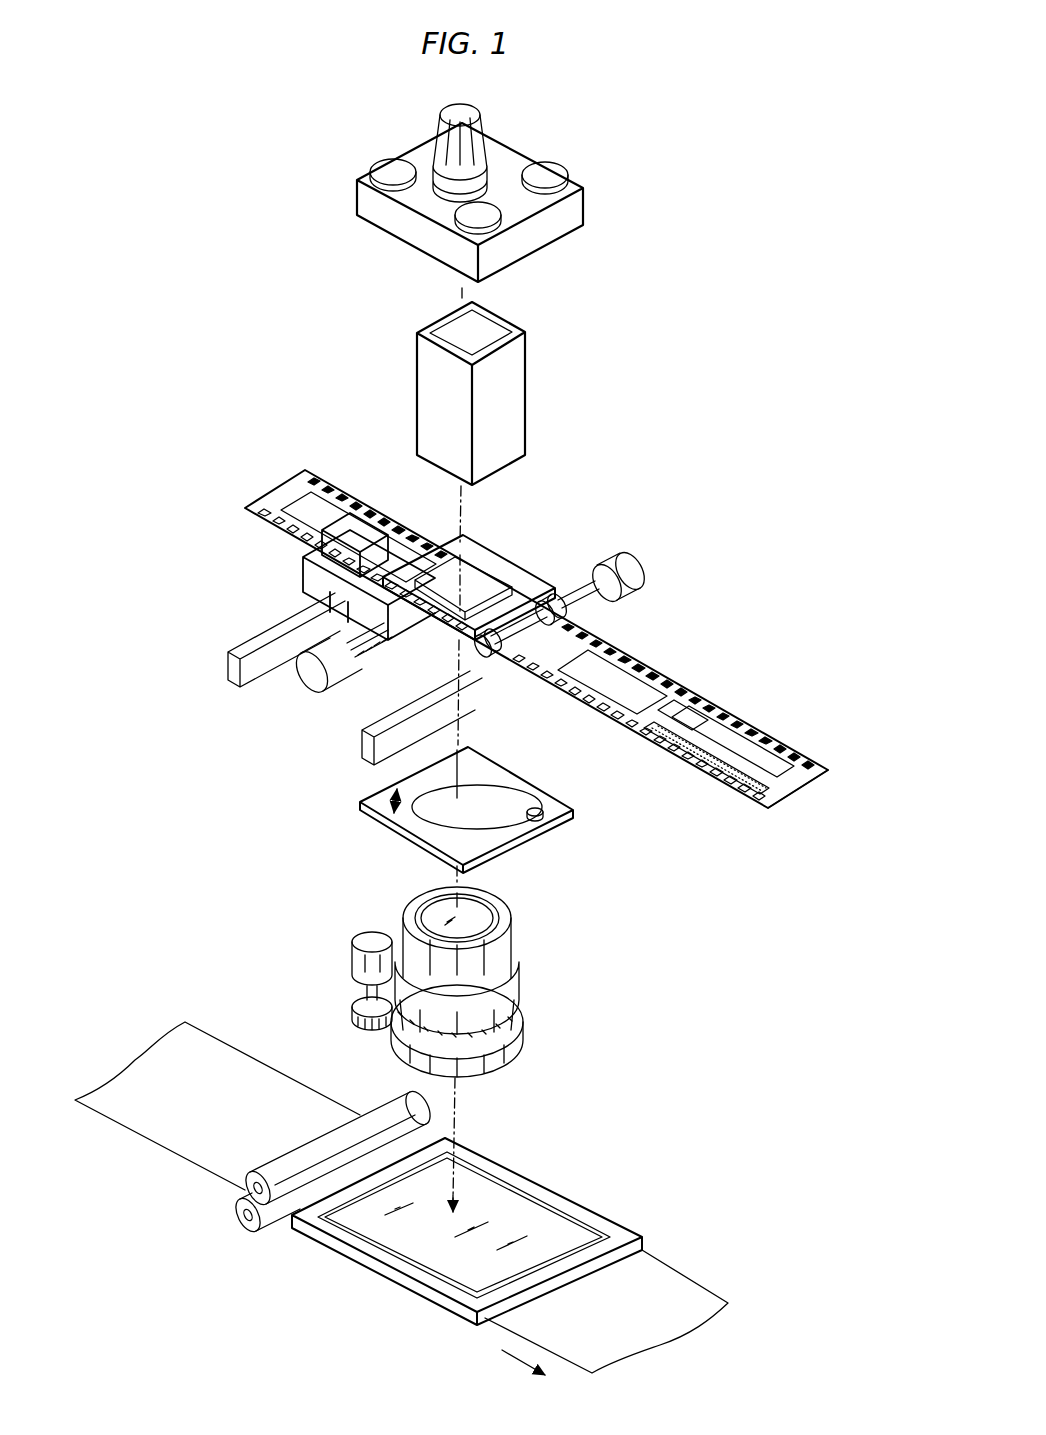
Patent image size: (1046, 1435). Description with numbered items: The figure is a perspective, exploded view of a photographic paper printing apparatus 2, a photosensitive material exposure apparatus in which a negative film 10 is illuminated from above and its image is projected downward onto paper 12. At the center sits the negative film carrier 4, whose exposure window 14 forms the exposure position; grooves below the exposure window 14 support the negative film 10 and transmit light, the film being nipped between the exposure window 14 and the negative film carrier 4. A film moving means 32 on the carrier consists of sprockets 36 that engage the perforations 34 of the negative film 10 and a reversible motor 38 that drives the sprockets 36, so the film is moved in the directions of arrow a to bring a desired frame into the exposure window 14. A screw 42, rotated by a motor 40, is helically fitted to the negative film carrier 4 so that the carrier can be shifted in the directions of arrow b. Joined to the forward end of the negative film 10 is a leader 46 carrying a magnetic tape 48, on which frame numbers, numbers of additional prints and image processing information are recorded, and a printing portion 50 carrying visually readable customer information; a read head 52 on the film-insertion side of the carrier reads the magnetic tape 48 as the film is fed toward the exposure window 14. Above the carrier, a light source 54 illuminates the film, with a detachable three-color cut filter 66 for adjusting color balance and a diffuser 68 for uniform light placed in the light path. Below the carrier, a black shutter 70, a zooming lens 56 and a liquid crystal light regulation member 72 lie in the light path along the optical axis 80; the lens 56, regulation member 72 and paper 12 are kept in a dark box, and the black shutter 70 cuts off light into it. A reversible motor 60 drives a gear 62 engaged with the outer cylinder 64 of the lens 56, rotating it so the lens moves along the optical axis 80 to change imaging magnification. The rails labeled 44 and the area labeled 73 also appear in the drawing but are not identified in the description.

The photographic paper printing apparatus 2 is at (634, 950).
The negative film carrier 4 is at (434, 601).
The negative film 10 is at (549, 636).
The paper 12 is at (182, 1132).
The exposure window 14 is at (503, 563).
The film moving means 32 is at (640, 565).
The perforations 34 is at (329, 486).
The sprockets 36 is at (571, 608).
The reversible motor 38 is at (628, 583).
The motor 40 is at (311, 683).
The screw 42 is at (320, 604).
The guide rails 44 is at (226, 668).
The leader 46 is at (812, 780).
The magnetic tape 48 is at (777, 798).
The printing portion 50 is at (753, 745).
The read head 52 is at (337, 518).
The light source 54 is at (483, 152).
The lens 56 is at (449, 978).
The reversible motor 60 is at (358, 965).
The gear 62 is at (352, 1015).
The outer cylinder 64 is at (405, 1052).
The three-color cut filter 66 is at (561, 231).
The diffuser 68 is at (513, 407).
The black shutter 70 is at (527, 792).
The liquid crystal light regulation member 72 is at (467, 1231).
The exposure area 73 is at (415, 1252).
The optical axis 80 is at (458, 1128).
The arrow a is at (668, 661).
The arrow b is at (387, 676).